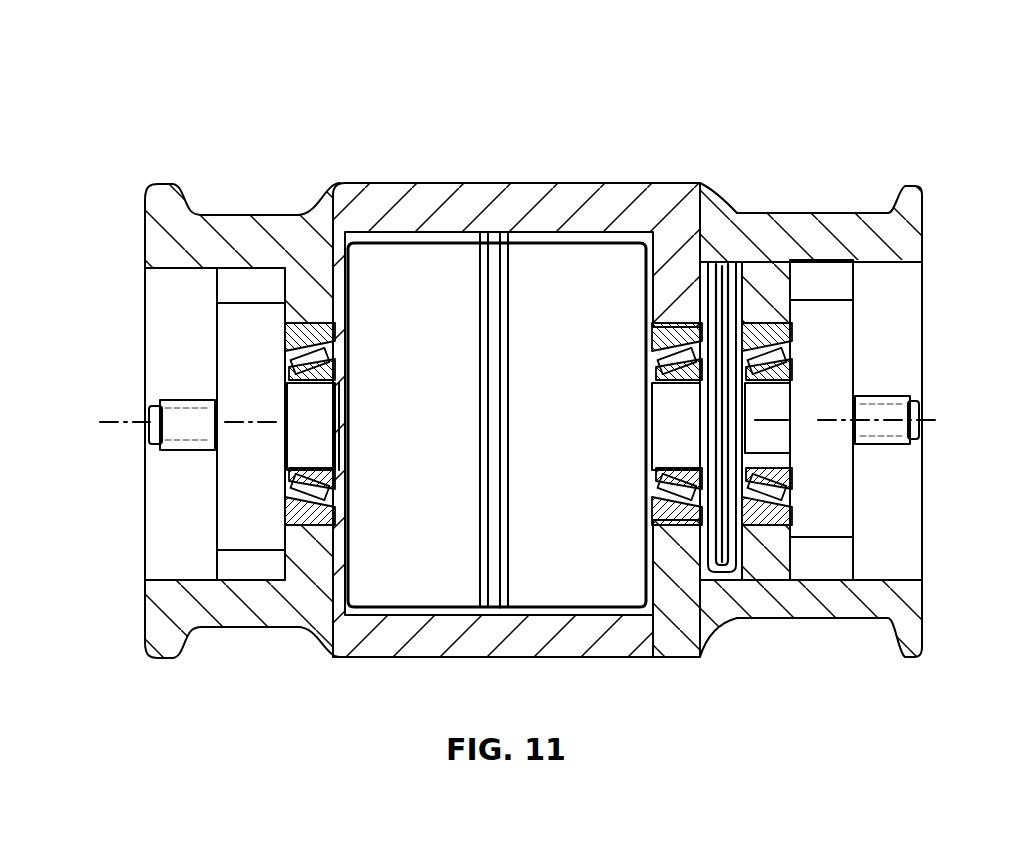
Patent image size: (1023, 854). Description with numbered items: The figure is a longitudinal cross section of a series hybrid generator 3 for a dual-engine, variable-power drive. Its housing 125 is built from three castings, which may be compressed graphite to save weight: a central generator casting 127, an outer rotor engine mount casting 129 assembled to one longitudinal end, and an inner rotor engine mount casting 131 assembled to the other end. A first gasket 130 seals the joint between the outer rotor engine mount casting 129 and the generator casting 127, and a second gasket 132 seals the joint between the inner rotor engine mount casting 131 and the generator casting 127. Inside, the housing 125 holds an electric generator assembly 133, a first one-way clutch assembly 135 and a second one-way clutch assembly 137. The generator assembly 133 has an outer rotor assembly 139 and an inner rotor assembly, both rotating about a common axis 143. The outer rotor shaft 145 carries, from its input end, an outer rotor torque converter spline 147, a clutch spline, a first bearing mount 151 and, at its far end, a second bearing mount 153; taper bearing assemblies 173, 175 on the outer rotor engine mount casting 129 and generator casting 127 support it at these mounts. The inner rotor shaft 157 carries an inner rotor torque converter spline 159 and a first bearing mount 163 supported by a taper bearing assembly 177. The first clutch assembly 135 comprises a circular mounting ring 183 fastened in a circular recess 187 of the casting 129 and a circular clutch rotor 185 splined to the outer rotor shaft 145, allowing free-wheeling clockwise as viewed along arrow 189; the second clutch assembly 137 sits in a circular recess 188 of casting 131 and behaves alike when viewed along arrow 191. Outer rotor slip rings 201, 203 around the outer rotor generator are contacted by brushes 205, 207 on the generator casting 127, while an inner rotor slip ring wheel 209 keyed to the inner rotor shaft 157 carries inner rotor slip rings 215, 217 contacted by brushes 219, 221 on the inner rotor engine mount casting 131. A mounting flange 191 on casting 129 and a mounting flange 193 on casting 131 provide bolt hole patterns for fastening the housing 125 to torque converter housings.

The series hybrid generator 3 is at (558, 78).
The housing 125 is at (706, 664).
The generator casting 127 is at (372, 197).
The outer rotor engine mount casting 129 is at (241, 627).
The first gasket 130 is at (333, 190).
The inner rotor engine mount casting 131 is at (835, 603).
The second gasket 132 is at (702, 212).
The electric generator assembly 133 is at (600, 285).
The first one-way clutch assembly 135 is at (215, 566).
The second one-way clutch assembly 137 is at (858, 556).
The outer rotor assembly 139 is at (656, 610).
The axis 143 is at (118, 436).
The outer rotor shaft 145 is at (160, 446).
The outer rotor torque converter spline 147 is at (165, 400).
The first bearing mount 151 is at (287, 392).
The second bearing mount 153 is at (648, 415).
The inner rotor shaft 157 is at (913, 437).
The inner rotor torque converter spline 159 is at (893, 393).
The first bearing mount 163 is at (776, 436).
The taper bearing assembly 173 is at (340, 362).
The taper bearing assembly 175 is at (648, 362).
The taper bearing assembly 177 is at (778, 490).
The circular mounting ring 183 is at (233, 283).
The circular clutch rotor 185 is at (268, 320).
The circular recess 187 is at (200, 588).
The circular recess 188 is at (896, 573).
The arrow 189 is at (62, 424).
The mounting flange 191 is at (162, 195).
The mounting flange 193 is at (903, 200).
The outer rotor slip ring 201 is at (480, 376).
The outer rotor slip ring 203 is at (513, 378).
The outer rotor electric brush 205 is at (484, 232).
The outer rotor electric brush 207 is at (505, 232).
The inner rotor slip ring wheel 209 is at (745, 262).
The inner rotor slip ring 215 is at (650, 396).
The inner rotor slip ring 217 is at (765, 388).
The inner rotor electric brush 219 is at (714, 262).
The inner rotor electric brush 221 is at (730, 262).